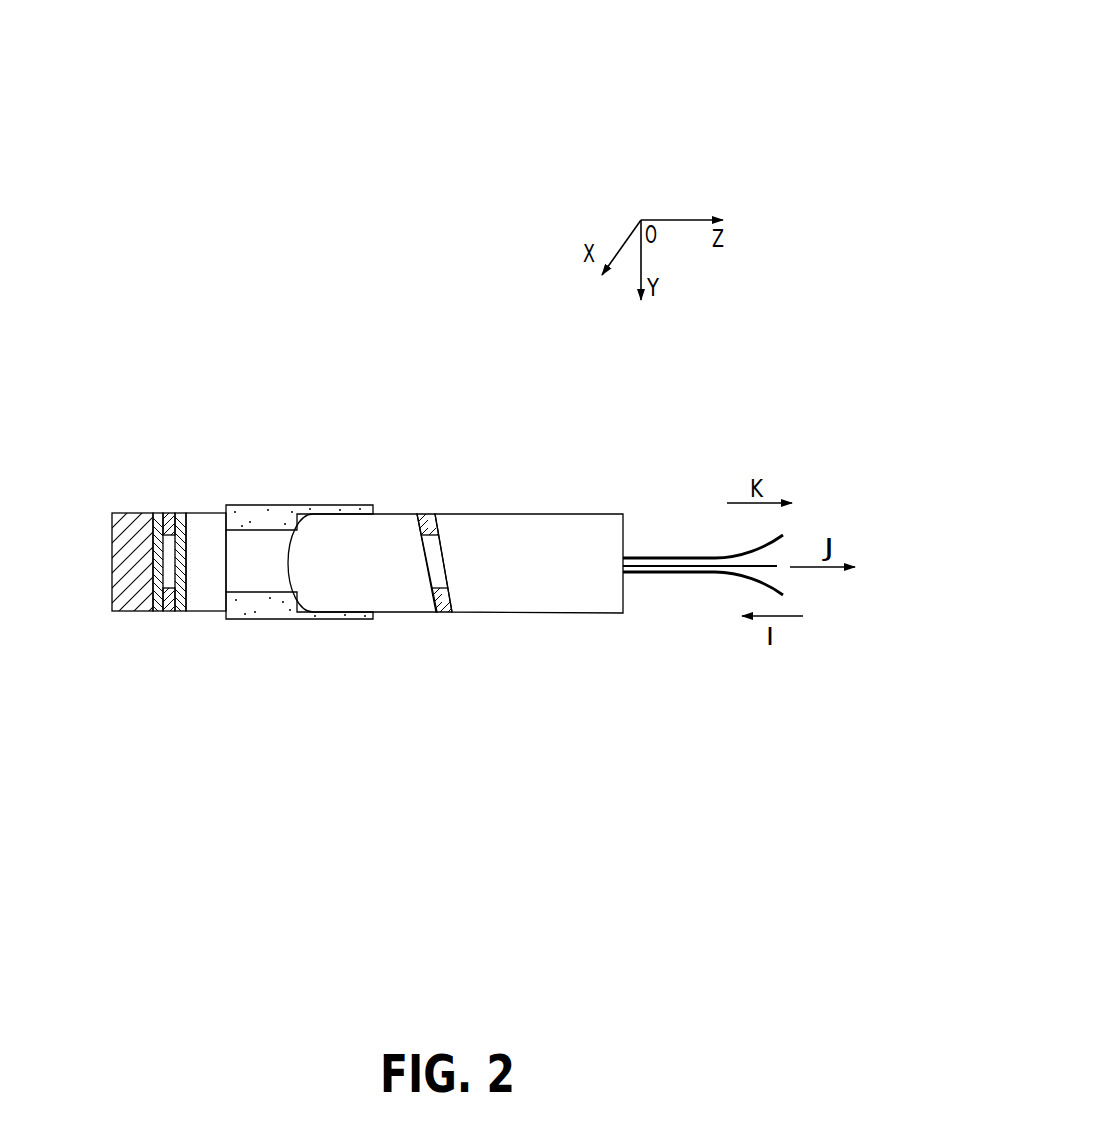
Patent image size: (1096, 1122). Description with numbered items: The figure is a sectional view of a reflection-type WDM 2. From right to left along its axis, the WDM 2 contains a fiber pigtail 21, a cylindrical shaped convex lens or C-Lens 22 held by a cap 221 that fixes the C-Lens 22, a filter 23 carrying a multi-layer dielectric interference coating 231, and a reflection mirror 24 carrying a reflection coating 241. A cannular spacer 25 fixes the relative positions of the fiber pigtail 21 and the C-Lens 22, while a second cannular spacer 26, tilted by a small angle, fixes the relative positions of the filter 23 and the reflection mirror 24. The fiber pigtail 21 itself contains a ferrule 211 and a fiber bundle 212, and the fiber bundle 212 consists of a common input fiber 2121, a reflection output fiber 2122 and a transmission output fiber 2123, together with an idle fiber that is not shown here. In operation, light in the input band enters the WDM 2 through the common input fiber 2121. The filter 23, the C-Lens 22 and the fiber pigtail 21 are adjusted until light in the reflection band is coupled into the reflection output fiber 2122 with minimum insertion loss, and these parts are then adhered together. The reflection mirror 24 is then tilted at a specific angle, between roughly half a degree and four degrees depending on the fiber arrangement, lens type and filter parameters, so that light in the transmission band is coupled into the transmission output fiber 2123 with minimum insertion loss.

The WDM 2 is at (789, 32).
The fiber pigtail 21 is at (664, 615).
The ferrule 211 is at (556, 535).
The fiber bundle 212 is at (758, 513).
The common input fiber 2121 is at (757, 582).
The reflection output fiber 2122 is at (772, 567).
The transmission output fiber 2123 is at (767, 542).
The cylindrical shaped convex lens (C-Lens) 22 is at (392, 540).
The cap 221 is at (268, 526).
The filter 23 is at (200, 530).
The multi-layer dielectric interference coating 231 is at (178, 610).
The reflection mirror 24 is at (120, 537).
The reflection coating 241 is at (157, 613).
The cannular spacer 25 is at (443, 610).
The second cannular spacer 26 is at (171, 528).